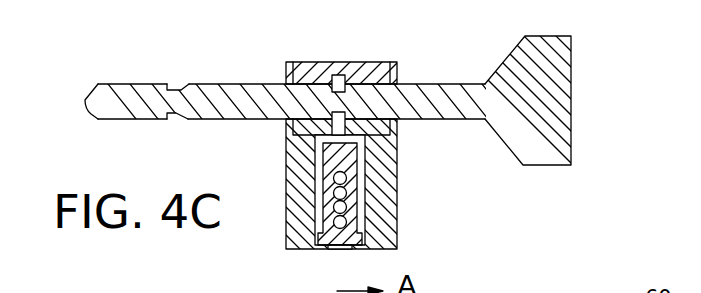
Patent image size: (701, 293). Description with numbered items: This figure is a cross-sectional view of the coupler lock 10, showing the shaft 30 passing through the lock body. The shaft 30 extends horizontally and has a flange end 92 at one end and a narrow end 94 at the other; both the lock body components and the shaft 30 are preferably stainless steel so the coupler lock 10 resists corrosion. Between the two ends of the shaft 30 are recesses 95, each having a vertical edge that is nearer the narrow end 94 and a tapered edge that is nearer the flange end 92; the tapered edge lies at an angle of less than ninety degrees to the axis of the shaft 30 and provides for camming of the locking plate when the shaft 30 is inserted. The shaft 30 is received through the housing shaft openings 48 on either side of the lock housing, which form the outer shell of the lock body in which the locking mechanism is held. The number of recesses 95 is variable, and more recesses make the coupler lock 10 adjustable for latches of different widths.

The coupler lock 10 is at (381, 142).
The shaft 30 is at (253, 83).
The housing shaft openings 48 is at (398, 121).
The flange end 92 is at (573, 57).
The narrow end 94 is at (89, 97).
The recesses 95 is at (179, 84).